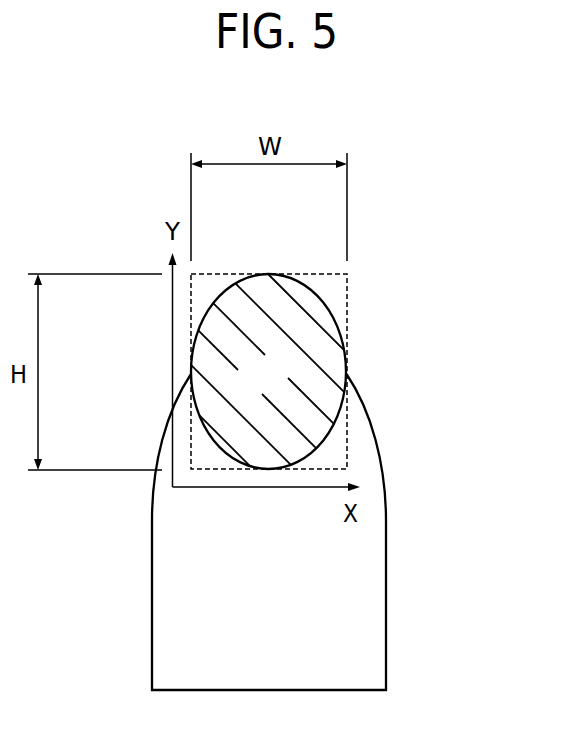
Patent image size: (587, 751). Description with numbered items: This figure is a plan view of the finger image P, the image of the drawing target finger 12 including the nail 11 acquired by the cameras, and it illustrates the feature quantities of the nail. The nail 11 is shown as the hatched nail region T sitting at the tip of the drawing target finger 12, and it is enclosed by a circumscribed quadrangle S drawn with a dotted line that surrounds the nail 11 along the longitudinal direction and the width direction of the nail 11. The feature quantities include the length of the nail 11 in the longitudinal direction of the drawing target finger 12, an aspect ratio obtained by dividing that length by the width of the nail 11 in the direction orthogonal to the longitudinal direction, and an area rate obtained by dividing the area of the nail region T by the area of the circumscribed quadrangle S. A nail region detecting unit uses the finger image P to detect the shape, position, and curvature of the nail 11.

The nail 11 is at (335, 416).
The drawing target finger 12 is at (375, 630).
The finger image P is at (398, 362).
The circumscribed quadrangle S is at (347, 313).
The nail region T is at (268, 371).